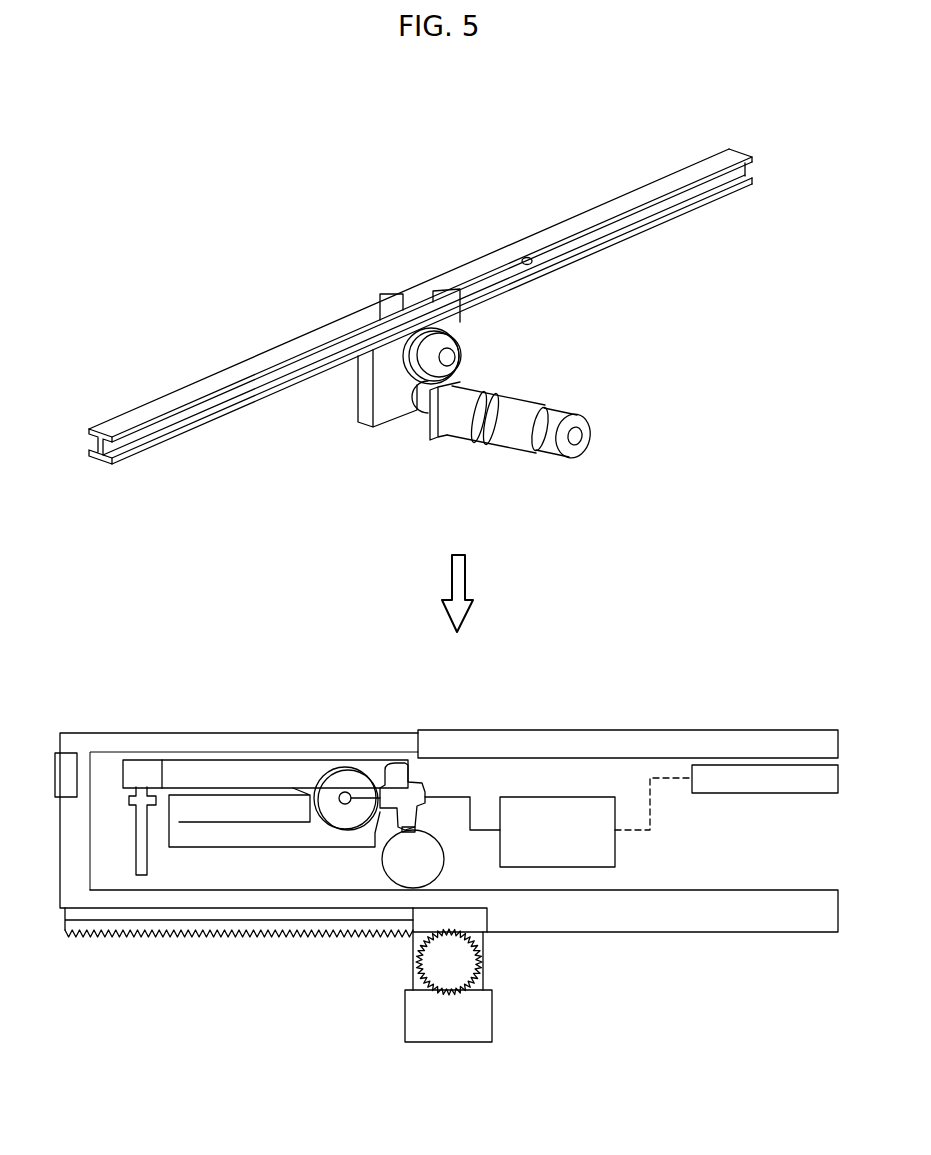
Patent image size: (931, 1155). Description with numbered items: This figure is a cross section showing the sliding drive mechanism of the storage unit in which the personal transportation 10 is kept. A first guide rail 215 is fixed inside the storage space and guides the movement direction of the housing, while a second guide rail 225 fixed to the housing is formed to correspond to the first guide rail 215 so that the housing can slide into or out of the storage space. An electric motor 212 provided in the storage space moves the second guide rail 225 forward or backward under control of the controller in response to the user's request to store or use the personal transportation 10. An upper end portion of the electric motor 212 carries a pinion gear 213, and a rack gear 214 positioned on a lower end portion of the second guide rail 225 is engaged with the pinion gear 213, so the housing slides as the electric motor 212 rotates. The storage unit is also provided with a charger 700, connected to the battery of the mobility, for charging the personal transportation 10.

The personal transportation 10 is at (173, 772).
The electric motor 212 is at (538, 413).
The pinion gear 213 is at (462, 356).
The rack gear 214 is at (278, 932).
The first guide rail 215 is at (711, 160).
The second guide rail 225 is at (118, 428).
The charger 700 is at (558, 805).